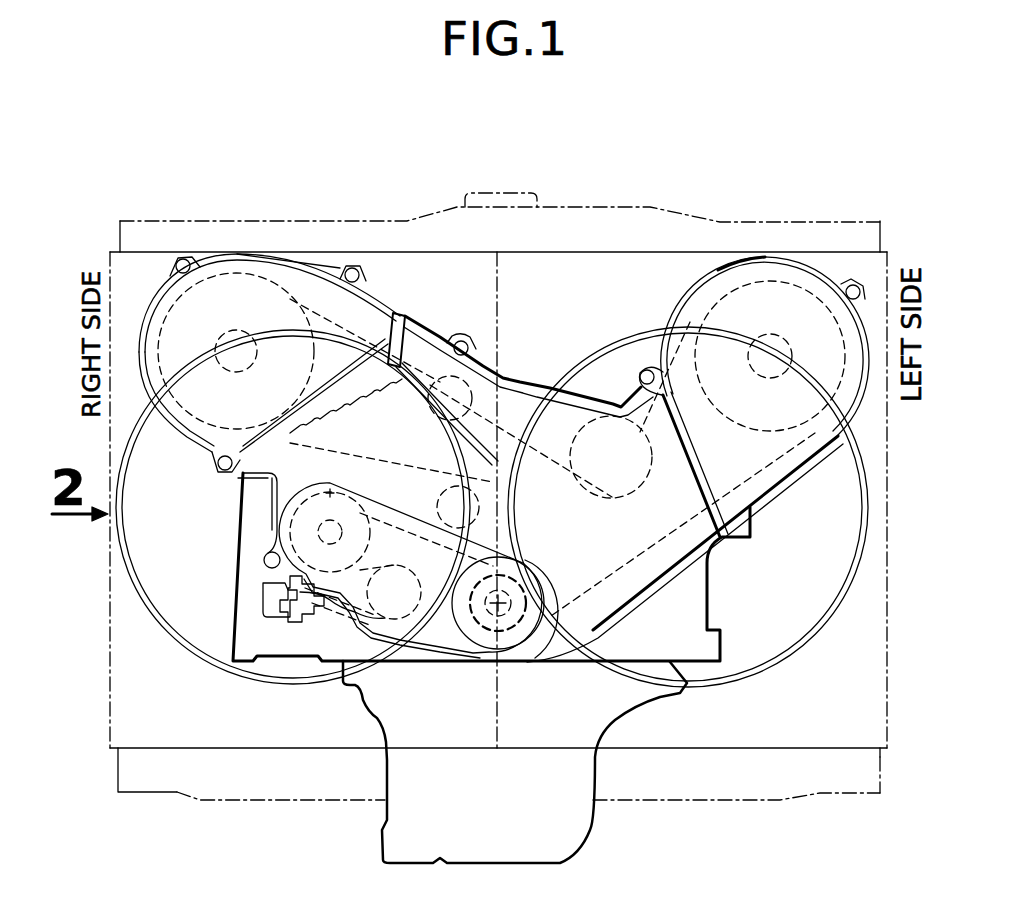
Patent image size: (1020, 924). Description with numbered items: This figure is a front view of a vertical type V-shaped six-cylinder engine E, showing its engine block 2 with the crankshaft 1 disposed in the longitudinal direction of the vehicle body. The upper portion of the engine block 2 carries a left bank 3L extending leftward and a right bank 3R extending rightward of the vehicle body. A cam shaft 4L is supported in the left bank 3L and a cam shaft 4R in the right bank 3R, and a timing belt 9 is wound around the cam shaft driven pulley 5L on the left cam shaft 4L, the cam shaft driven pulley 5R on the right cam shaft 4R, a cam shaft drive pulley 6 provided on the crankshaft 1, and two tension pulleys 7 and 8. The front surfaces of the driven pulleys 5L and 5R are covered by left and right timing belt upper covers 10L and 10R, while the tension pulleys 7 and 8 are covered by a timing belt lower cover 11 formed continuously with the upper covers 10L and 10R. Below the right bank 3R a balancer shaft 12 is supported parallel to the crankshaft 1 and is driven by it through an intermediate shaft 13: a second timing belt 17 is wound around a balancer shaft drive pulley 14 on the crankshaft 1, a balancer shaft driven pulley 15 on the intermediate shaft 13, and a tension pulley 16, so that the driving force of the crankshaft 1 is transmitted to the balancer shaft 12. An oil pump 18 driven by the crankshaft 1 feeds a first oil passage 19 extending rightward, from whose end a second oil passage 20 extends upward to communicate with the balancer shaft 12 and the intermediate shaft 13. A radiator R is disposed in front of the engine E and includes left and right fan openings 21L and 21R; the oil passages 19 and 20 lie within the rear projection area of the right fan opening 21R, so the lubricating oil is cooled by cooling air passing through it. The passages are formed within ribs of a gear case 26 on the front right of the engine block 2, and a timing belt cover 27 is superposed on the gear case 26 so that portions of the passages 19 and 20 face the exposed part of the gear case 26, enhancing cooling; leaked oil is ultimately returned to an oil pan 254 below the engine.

The crankshaft 1 is at (534, 585).
The engine block 2 is at (244, 539).
The right bank 3R is at (324, 258).
The left bank 3L is at (722, 259).
The cam shaft 4R is at (245, 337).
The cam shaft 4L is at (762, 338).
The cam shaft driven pulley 5R is at (345, 393).
The cam shaft driven pulley 5L is at (735, 440).
The cam shaft drive pulley 6 is at (520, 552).
The tension pulley 7 is at (571, 427).
The tension pulley 8 is at (445, 495).
The timing belt 9 is at (466, 400).
The timing belt upper cover 10R is at (163, 312).
The timing belt upper cover 10L is at (850, 394).
The timing belt lower cover 11 is at (518, 396).
The balancer shaft 12 is at (272, 590).
The intermediate shaft 13 is at (328, 487).
The balancer shaft drive pulley 14 is at (520, 642).
The balancer shaft driven pulley 15 is at (400, 572).
The tension pulley 16 is at (352, 623).
The timing belt 17 is at (393, 522).
The oil pump 18 is at (477, 662).
The first oil passage 19 is at (317, 626).
The second oil passage 20 is at (278, 520).
The fan opening 21R is at (176, 633).
The fan opening 21L is at (798, 650).
The gear case 26 is at (284, 616).
The timing belt cover 27 is at (364, 496).
The oil pan 254 is at (622, 828).
The radiator R is at (577, 200).
The engine E is at (536, 348).